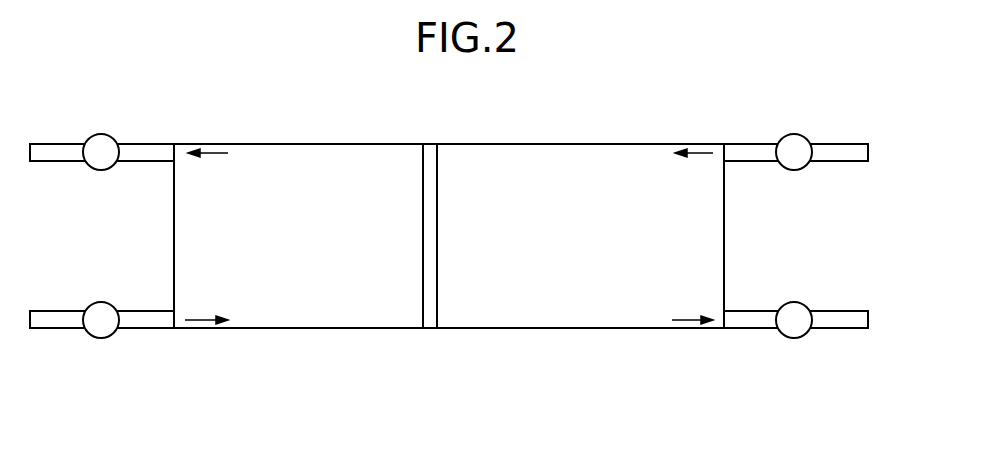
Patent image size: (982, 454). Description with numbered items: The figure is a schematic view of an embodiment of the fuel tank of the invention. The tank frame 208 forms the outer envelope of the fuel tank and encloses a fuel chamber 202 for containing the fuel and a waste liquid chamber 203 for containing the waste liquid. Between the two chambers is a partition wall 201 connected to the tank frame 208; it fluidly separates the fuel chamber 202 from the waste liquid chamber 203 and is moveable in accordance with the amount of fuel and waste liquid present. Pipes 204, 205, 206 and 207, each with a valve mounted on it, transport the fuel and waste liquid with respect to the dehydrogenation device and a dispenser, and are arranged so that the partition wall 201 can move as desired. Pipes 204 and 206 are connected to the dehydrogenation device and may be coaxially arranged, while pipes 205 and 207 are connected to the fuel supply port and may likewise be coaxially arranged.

The partition wall 201 is at (428, 150).
The fuel chamber 202 is at (301, 150).
The waste liquid chamber 203 is at (583, 150).
The pipe 204 is at (58, 150).
The pipe 205 is at (58, 316).
The pipe 206 is at (840, 150).
The pipe 207 is at (840, 316).
The tank frame 208 is at (517, 330).